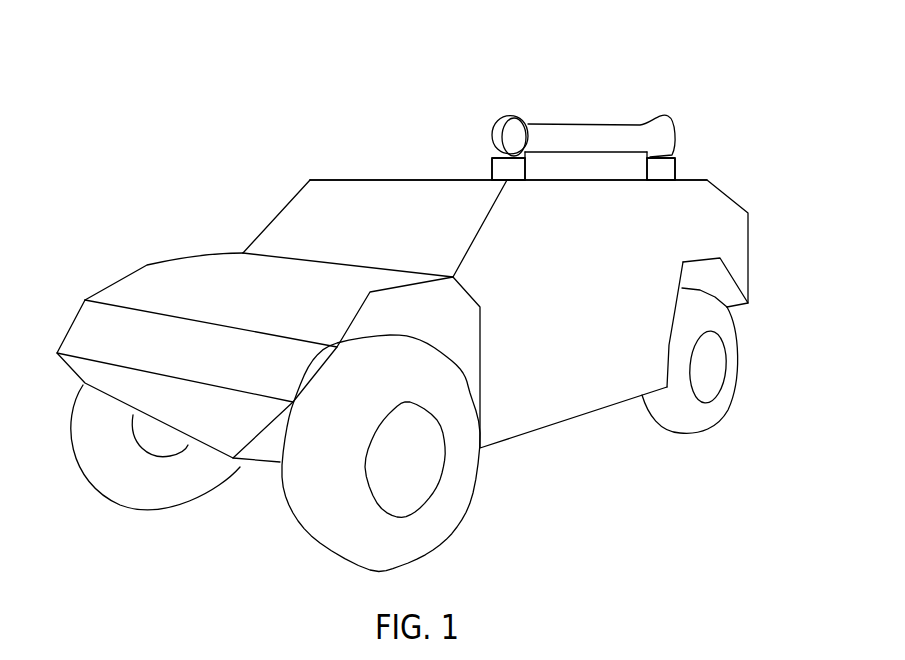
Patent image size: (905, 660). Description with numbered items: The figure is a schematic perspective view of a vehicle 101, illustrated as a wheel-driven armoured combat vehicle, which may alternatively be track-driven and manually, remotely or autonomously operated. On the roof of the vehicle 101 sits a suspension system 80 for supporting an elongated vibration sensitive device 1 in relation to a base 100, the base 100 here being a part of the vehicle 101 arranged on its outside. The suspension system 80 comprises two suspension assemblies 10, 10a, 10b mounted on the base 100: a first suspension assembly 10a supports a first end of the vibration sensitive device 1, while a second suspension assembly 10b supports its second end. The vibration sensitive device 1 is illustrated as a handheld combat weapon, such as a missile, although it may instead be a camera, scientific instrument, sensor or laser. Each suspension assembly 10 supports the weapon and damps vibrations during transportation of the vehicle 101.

The vehicle 101 is at (267, 138).
The base 100 is at (587, 181).
The suspension system 80 is at (595, 97).
The vibration sensitive device 1 is at (620, 126).
The suspension assembly 10 is at (488, 160).
The first suspension assembly 10a is at (487, 172).
The second suspension assembly 10b is at (683, 172).